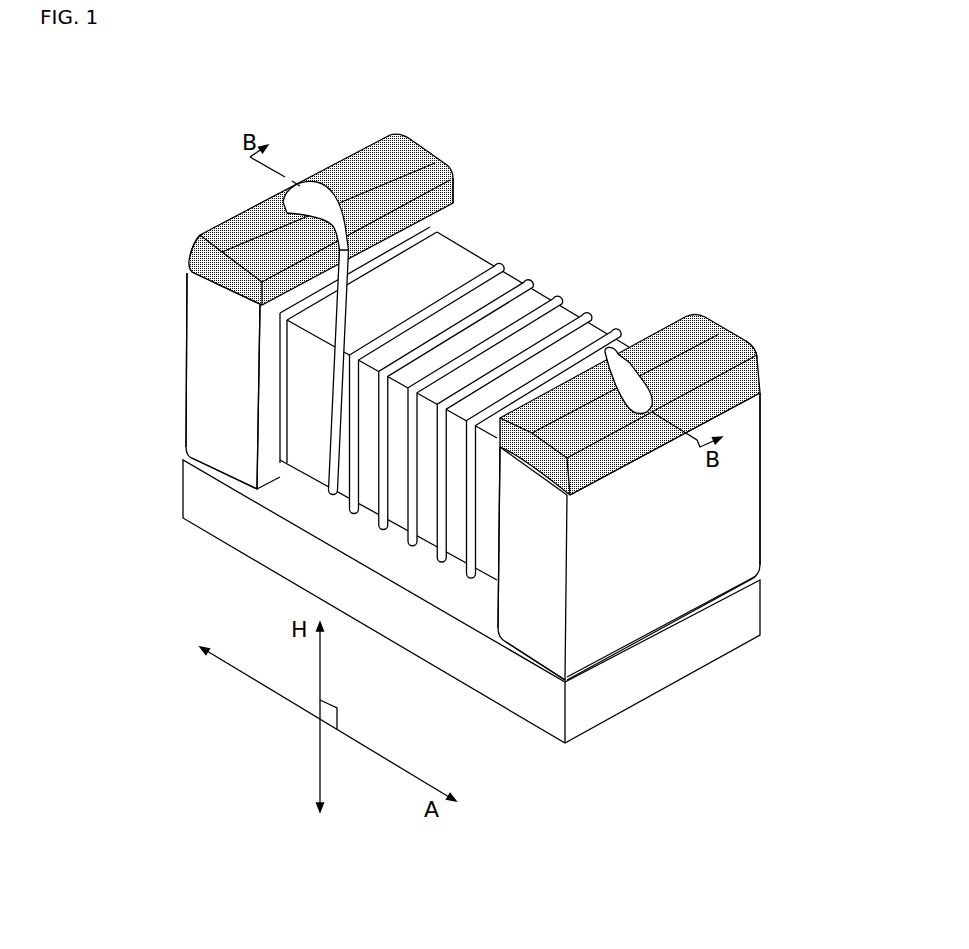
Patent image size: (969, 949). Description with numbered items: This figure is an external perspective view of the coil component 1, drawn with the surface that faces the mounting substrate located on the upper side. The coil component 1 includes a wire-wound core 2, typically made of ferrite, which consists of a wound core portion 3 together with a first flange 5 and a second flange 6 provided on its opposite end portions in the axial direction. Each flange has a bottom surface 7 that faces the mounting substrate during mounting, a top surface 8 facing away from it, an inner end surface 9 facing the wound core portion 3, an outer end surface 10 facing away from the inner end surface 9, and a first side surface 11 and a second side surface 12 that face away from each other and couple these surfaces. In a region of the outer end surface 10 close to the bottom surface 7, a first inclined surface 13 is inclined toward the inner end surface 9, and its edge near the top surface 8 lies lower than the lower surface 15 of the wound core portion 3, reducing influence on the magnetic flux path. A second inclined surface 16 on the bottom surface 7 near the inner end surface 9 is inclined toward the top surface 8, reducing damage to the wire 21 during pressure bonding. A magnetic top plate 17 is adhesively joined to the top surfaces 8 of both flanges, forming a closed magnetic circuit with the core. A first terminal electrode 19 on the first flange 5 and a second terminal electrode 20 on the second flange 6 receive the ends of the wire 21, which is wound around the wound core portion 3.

The coil component 1 is at (600, 176).
The wire-wound core 2 is at (163, 393).
The wound core portion 3 is at (473, 258).
The first flange 5 is at (185, 420).
The second flange 6 is at (763, 532).
The bottom surface 7 is at (417, 144).
The top surface 8 is at (210, 477).
The inner end surface 9 is at (272, 487).
The outer end surface 10 is at (185, 362).
The first side surface 11 is at (200, 330).
The second side surface 12 is at (455, 215).
The first inclined surface 13 is at (190, 255).
The lower surface 15 is at (497, 287).
The second inclined surface 16 is at (427, 168).
The top plate 17 is at (603, 723).
The first terminal electrode 19 is at (372, 150).
The second terminal electrode 20 is at (713, 333).
The wire 21 is at (552, 302).